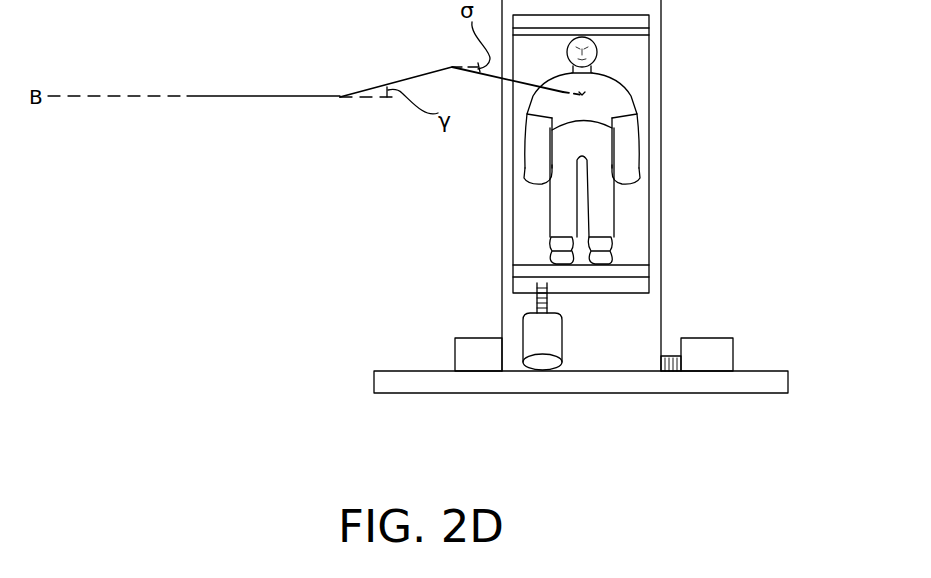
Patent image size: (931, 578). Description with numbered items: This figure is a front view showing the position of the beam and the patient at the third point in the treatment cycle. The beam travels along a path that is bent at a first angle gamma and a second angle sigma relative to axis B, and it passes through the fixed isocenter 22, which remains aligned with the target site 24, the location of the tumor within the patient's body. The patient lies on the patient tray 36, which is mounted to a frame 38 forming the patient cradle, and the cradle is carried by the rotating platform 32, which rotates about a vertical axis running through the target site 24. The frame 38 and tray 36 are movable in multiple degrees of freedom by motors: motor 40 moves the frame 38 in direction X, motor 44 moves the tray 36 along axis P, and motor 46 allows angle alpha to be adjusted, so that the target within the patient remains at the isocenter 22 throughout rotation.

The isocenter 22 is at (582, 95).
The target site 24 is at (582, 95).
The rotating platform 32 is at (750, 383).
The patient tray 36 is at (638, 271).
The frame 38 is at (630, 341).
The motor 40 is at (720, 368).
The motor 44 is at (555, 344).
The motor 46 is at (492, 368).